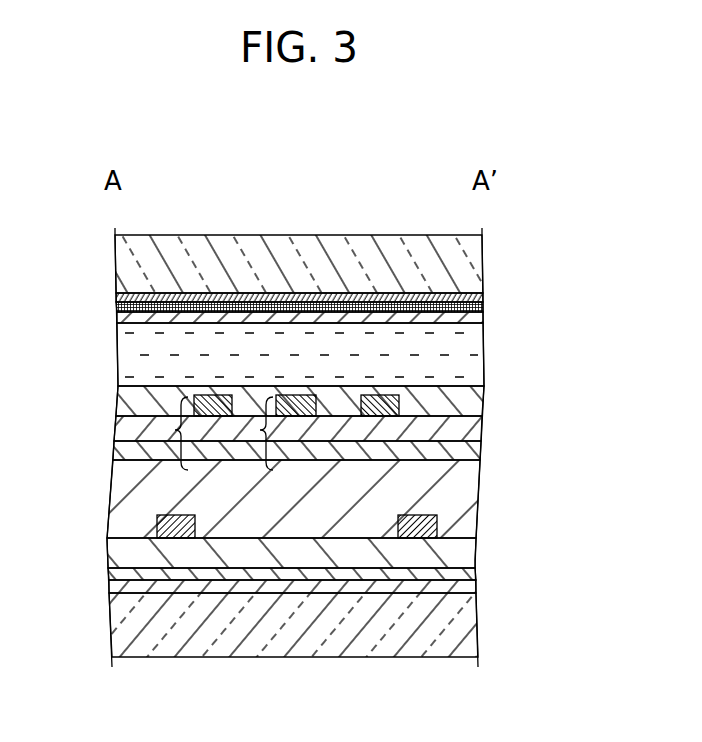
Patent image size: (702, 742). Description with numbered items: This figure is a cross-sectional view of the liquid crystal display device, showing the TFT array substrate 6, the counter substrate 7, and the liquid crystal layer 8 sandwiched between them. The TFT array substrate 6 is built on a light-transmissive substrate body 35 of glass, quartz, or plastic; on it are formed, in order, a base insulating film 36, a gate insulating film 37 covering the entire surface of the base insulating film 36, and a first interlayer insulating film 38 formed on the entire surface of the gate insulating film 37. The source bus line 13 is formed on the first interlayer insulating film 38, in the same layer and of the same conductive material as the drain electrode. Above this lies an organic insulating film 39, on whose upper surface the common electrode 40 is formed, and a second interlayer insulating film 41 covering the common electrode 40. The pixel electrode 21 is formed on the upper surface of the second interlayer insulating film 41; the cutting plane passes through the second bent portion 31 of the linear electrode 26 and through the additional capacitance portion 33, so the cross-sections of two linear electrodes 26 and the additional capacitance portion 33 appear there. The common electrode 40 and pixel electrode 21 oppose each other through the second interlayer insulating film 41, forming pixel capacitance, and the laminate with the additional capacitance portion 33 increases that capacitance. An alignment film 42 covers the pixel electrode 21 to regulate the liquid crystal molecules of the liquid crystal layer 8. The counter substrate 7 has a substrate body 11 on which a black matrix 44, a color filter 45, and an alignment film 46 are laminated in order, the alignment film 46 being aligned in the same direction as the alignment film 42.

The TFT array substrate 6 is at (78, 387).
The counter substrate 7 is at (78, 236).
The liquid crystal layer 8 is at (118, 354).
The substrate body 11 is at (478, 245).
The source bus line 13 is at (175, 540).
The pixel electrode 21 is at (409, 378).
The linear electrode 26 is at (338, 288).
The second bent portion 31 is at (298, 395).
The additional capacitance portion 33 is at (212, 395).
The substrate body 35 is at (475, 622).
The base insulating film 36 is at (474, 588).
The gate insulating film 37 is at (472, 574).
The first interlayer insulating film 38 is at (470, 553).
The organic insulating film 39 is at (472, 498).
The common electrode 40 is at (478, 452).
The second interlayer insulating film 41 is at (478, 430).
The alignment film 42 is at (480, 400).
The black matrix 44 is at (484, 300).
The color filter 45 is at (484, 307).
The alignment film 46 is at (484, 318).